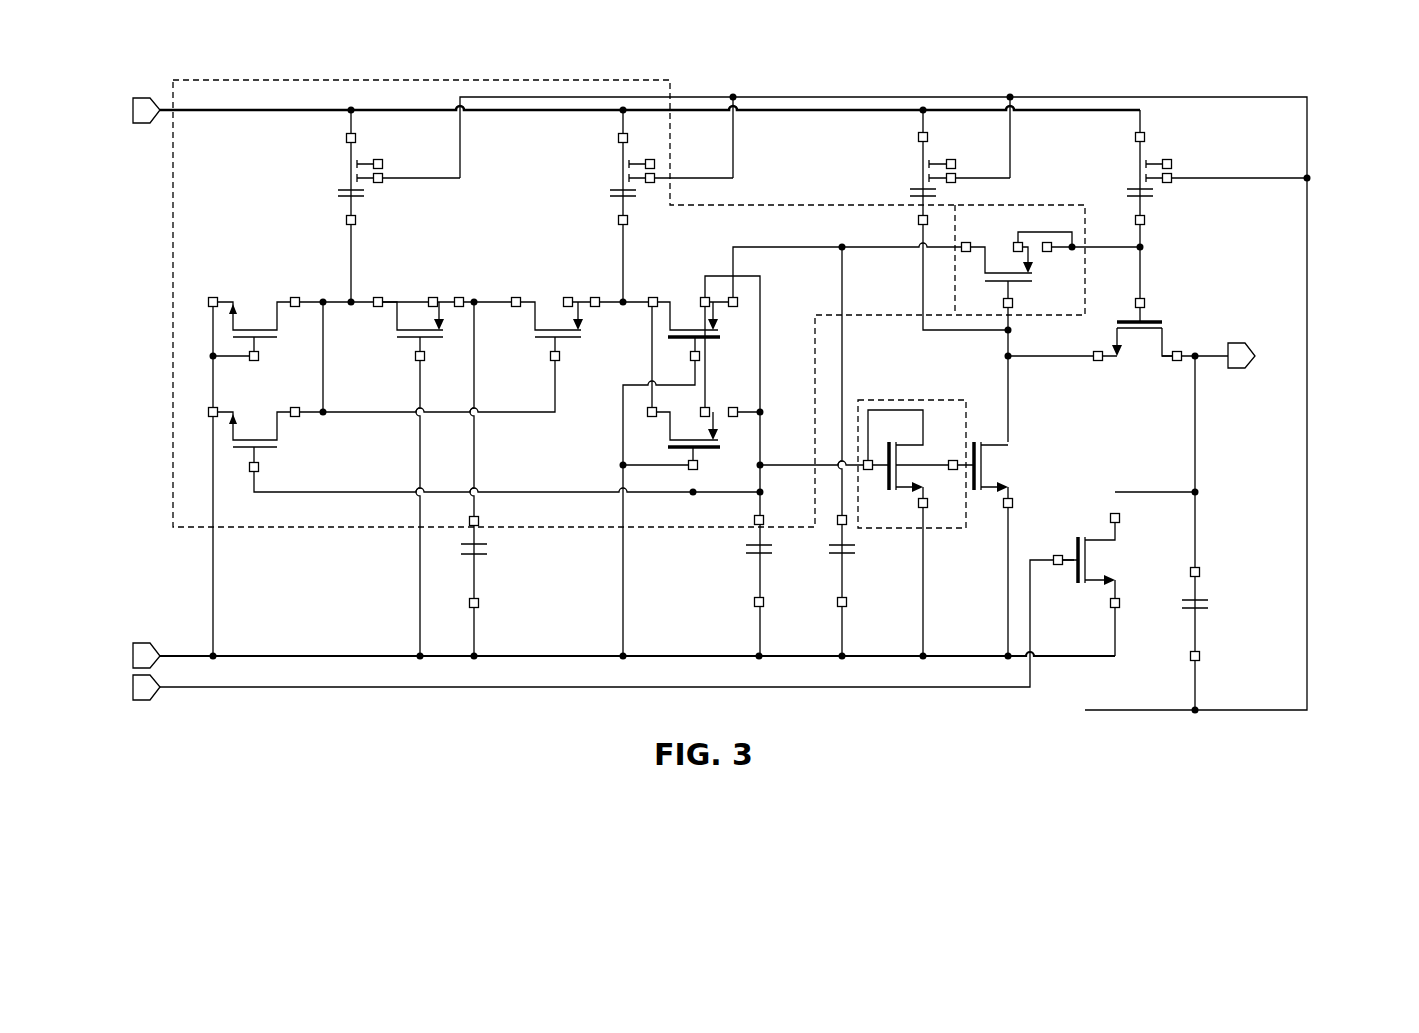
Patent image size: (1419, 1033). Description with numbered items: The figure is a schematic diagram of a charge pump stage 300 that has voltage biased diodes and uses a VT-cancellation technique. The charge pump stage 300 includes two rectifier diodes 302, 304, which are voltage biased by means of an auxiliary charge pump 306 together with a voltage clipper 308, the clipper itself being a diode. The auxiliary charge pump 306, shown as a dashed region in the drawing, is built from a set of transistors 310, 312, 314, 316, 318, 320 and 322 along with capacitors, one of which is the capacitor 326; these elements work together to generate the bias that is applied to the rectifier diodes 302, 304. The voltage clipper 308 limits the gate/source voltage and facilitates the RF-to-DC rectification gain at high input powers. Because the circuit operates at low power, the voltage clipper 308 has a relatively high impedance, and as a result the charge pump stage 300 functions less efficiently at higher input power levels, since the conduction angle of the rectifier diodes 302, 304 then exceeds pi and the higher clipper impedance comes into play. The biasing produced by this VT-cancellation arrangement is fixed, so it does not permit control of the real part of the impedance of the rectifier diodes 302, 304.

The charge pump stage 300 is at (1322, 80).
The rectifier diode 302 is at (1006, 465).
The rectifier diode 304 is at (1133, 364).
The auxiliary charge pump 306 is at (241, 70).
The voltage clipper 308 is at (936, 535).
The transistor 310 is at (553, 281).
The transistor 312 is at (430, 287).
The transistor 314 is at (698, 280).
The transistor 316 is at (731, 440).
The transistor 318 is at (1062, 258).
The transistor 320 is at (337, 476).
The transistor 322 is at (248, 292).
The capacitor 326 is at (614, 170).